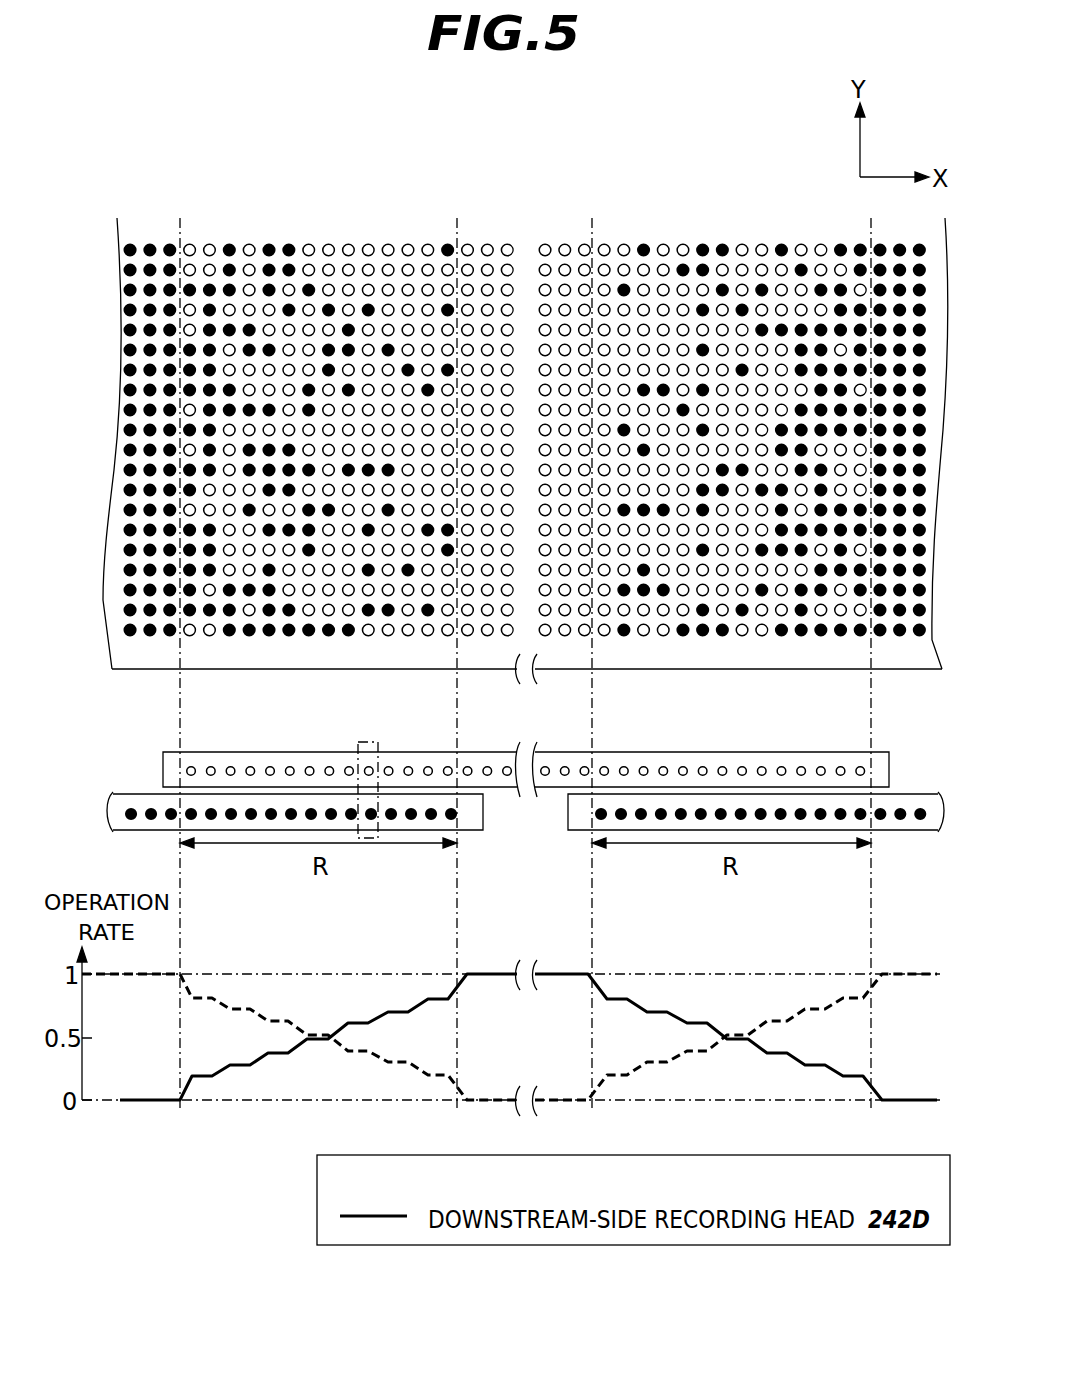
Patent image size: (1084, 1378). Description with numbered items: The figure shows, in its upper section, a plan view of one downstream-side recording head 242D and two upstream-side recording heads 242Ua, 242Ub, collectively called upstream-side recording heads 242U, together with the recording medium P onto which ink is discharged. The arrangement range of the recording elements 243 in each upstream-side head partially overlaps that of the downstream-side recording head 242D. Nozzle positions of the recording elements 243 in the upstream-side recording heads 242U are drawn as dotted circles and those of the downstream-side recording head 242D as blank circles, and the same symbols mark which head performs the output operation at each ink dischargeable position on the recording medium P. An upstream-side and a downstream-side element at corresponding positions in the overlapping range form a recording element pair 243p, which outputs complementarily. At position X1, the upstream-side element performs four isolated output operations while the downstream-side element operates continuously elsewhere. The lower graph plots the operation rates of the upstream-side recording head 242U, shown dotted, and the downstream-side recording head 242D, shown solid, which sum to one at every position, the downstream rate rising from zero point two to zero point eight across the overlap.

The recording medium P is at (122, 658).
The position in the X direction X1 is at (429, 232).
The downstream-side recording head 242D is at (163, 770).
The upstream-side recording heads 242U is at (340, 1181).
The upstream-side recording head 242Ua is at (465, 831).
The upstream-side recording head 242Ub is at (877, 831).
The recording elements 243 is at (150, 822).
The recording element pair 243p is at (378, 833).